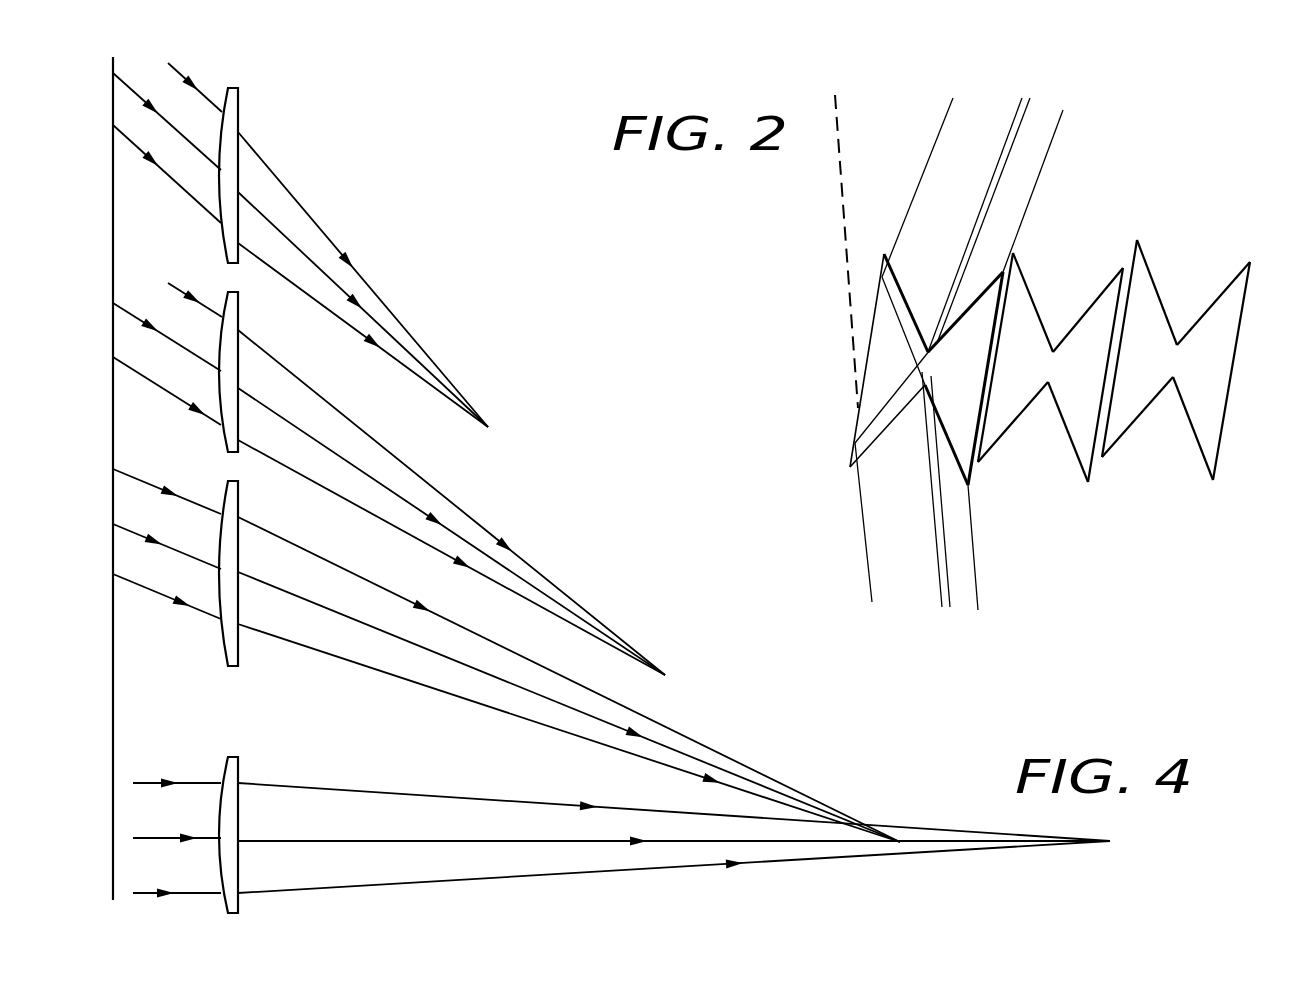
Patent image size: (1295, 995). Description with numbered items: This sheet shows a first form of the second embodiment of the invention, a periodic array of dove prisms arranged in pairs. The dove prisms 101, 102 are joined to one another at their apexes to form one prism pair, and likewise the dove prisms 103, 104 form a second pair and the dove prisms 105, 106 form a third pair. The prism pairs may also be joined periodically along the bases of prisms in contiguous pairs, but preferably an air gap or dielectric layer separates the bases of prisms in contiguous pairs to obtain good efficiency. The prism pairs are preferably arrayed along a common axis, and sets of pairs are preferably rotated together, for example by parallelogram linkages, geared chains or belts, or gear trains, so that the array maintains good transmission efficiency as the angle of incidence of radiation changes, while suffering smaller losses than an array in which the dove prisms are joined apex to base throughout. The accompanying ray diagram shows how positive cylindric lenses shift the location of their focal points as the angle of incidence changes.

The dove prism 101 is at (907, 302).
The dove prism 102 is at (973, 307).
The dove prism 103 is at (1030, 290).
The dove prism 104 is at (1083, 313).
The dove prism 105 is at (1152, 277).
The dove prism 106 is at (1212, 304).